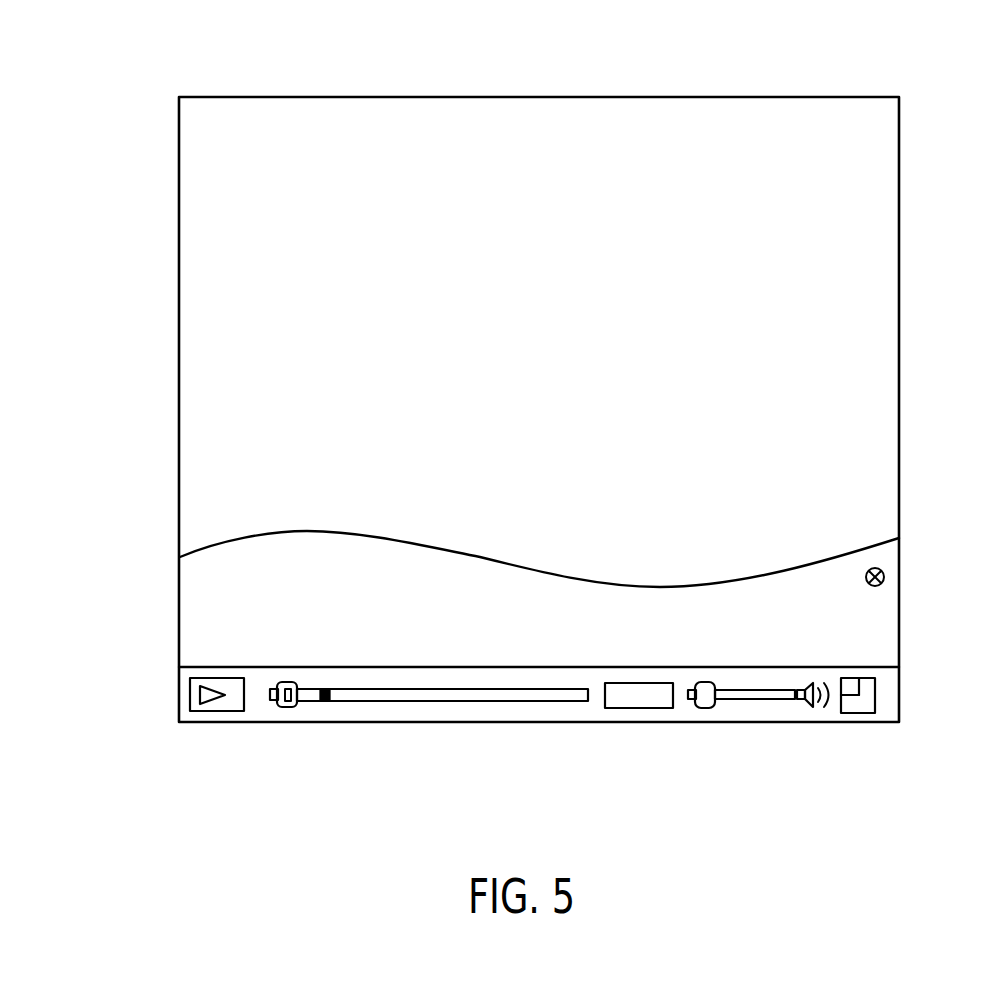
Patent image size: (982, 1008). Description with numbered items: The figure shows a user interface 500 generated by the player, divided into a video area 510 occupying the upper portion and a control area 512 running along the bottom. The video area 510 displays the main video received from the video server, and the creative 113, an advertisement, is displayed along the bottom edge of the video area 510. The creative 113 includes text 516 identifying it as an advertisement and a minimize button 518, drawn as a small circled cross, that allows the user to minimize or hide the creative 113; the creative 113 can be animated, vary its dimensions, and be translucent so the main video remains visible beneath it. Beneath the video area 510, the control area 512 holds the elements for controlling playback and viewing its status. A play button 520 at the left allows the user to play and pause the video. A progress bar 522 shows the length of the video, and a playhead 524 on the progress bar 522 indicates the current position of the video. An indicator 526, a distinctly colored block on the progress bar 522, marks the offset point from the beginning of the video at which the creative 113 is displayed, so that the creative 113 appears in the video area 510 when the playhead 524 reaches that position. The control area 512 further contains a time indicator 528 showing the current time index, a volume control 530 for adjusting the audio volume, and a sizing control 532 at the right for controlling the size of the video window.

The user interface 500 is at (847, 46).
The video area 510 is at (125, 97).
The control area 512 is at (127, 671).
The creative 113 is at (179, 617).
The text 516 is at (880, 640).
The minimize button 518 is at (884, 577).
The play button 520 is at (212, 711).
The progress bar 522 is at (510, 702).
The playhead 524 is at (287, 708).
The indicator 526 is at (326, 702).
The time display 528 is at (640, 708).
The volume control 530 is at (748, 703).
The sizing control 532 is at (876, 697).